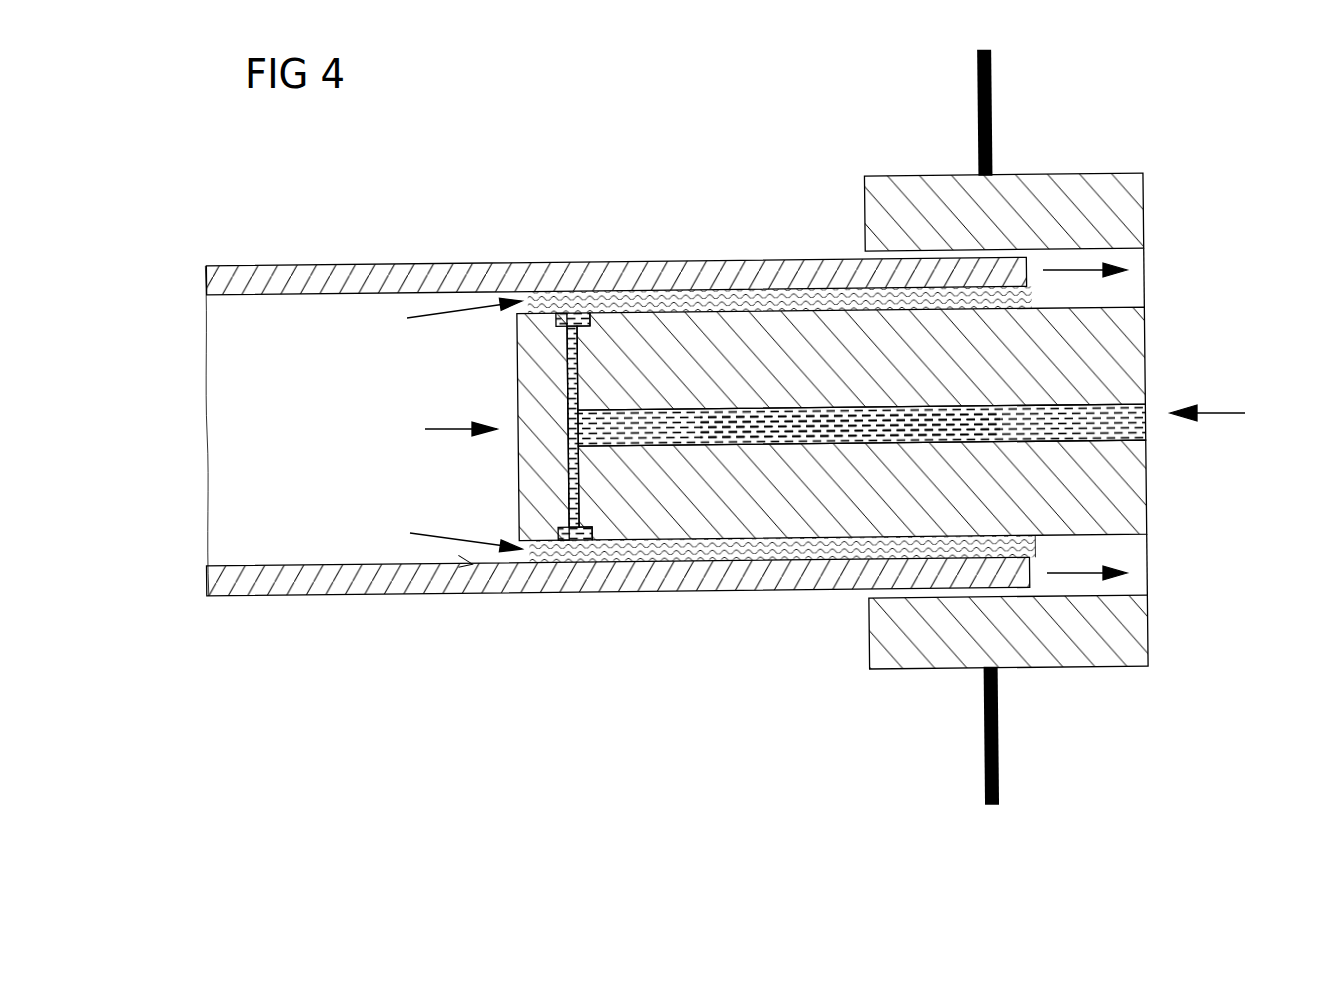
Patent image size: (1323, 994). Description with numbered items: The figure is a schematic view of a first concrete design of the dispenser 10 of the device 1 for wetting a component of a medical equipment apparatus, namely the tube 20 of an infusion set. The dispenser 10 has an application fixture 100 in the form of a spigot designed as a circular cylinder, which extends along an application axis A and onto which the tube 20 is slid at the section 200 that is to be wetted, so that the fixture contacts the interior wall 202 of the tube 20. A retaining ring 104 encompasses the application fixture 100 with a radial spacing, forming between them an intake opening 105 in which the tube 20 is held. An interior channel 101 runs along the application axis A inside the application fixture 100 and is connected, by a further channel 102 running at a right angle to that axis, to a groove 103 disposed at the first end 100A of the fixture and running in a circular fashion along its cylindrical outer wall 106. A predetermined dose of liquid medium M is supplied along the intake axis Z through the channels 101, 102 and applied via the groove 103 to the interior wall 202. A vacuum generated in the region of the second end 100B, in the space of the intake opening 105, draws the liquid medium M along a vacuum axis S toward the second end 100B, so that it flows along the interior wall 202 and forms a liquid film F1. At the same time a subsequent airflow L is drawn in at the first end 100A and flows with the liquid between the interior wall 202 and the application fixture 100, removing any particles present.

The device 1 is at (1229, 696).
The dispenser 10 is at (842, 429).
The tube 20 is at (617, 480).
The section 200 is at (800, 590).
The interior wall 202 is at (457, 560).
The application fixture 100 is at (843, 439).
The first end 100A is at (517, 392).
The second end 100B is at (938, 461).
The interior channel 101 is at (862, 417).
The channel 102 is at (606, 490).
The groove 103 is at (574, 541).
The retaining ring 104 is at (933, 657).
The intake opening 105 is at (852, 249).
The outer wall 106 is at (1042, 538).
The liquid film F1 is at (752, 548).
The liquid medium M is at (847, 440).
The airflow L is at (454, 425).
The vacuum axis S is at (1130, 271).
The intake axis Z is at (1223, 413).
The application axis A is at (438, 432).